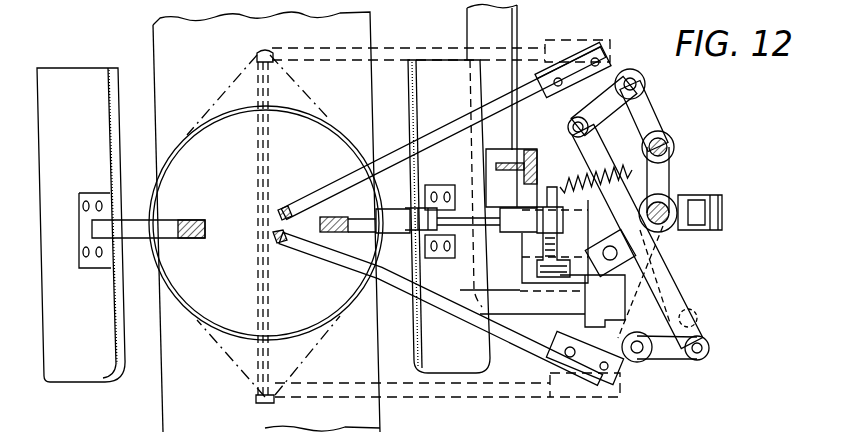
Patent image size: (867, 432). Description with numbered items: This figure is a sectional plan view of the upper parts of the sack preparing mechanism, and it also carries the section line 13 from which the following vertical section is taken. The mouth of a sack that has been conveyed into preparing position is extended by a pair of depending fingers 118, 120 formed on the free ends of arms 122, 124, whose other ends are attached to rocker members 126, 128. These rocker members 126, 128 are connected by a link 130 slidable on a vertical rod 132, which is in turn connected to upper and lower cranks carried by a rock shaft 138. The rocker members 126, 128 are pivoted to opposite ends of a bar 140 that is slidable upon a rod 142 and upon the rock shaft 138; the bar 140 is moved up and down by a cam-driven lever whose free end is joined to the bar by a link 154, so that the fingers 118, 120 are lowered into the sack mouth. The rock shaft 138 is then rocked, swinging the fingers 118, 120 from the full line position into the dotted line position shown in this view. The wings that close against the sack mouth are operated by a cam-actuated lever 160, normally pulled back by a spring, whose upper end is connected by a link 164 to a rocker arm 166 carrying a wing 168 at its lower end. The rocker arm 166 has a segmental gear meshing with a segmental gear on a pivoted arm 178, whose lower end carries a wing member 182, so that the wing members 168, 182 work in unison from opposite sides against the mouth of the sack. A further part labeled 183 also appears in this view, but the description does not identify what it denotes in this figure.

The section line 13— 13 is at (757, 250).
The depending finger 118 is at (278, 208).
The depending finger 120 is at (277, 235).
The arm 122 is at (393, 55).
The arm 124 is at (447, 303).
The rocker member 126 is at (603, 91).
The rocker member 128 is at (667, 355).
The link 130 is at (670, 297).
The vertical rod 132 is at (630, 258).
The rock shaft 138 is at (667, 207).
The bar 140 is at (643, 113).
The rod 142 is at (662, 147).
The link 154 is at (705, 212).
The lever 160 is at (547, 243).
The link 164 is at (460, 200).
The rocker arm 166 is at (330, 217).
The wing 168 is at (443, 363).
The arm 178 is at (123, 213).
The wing member 182 is at (77, 377).
The stop 183 is at (559, 178).